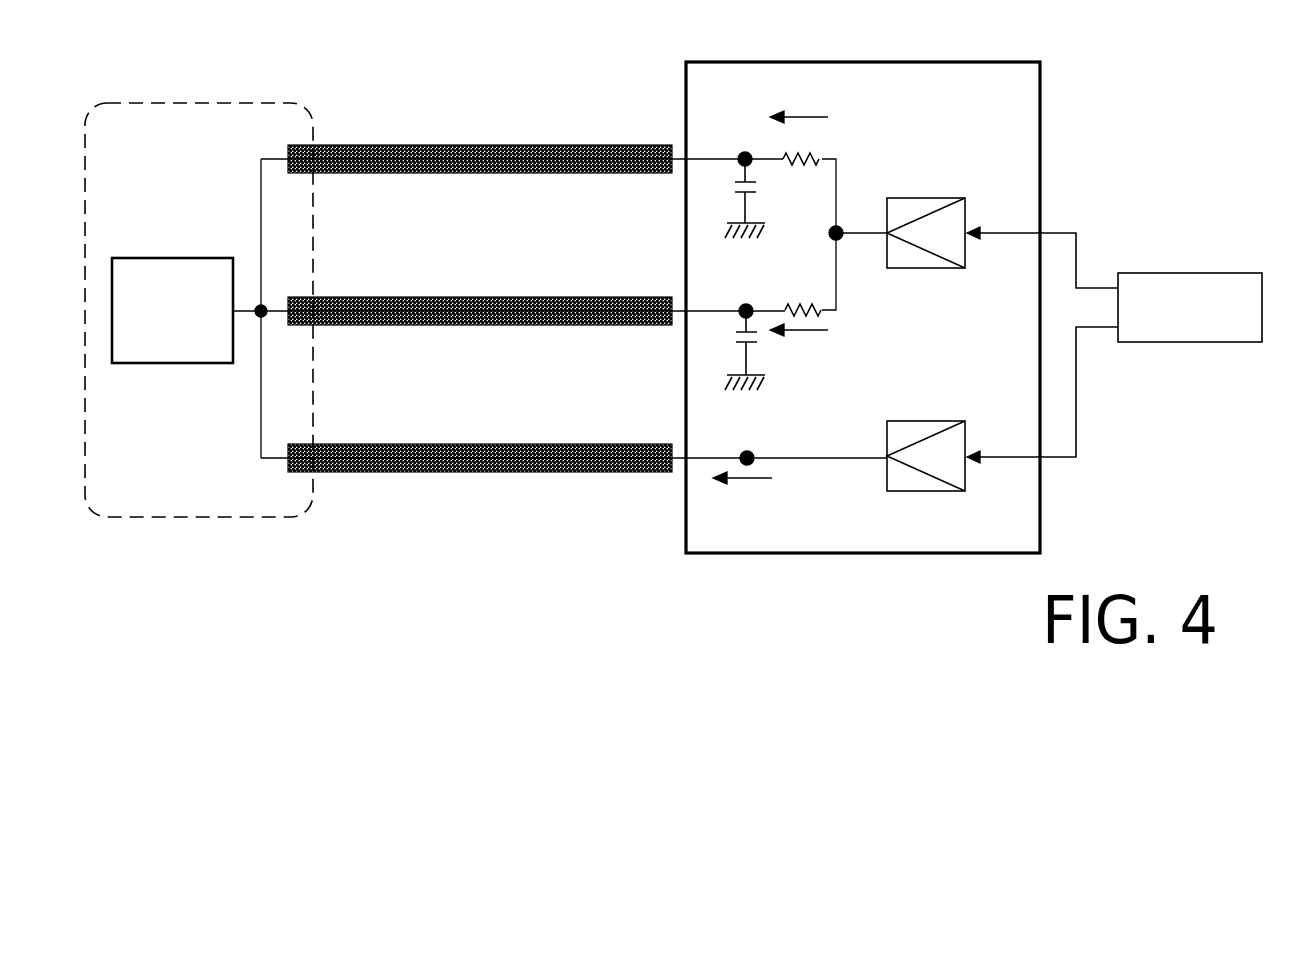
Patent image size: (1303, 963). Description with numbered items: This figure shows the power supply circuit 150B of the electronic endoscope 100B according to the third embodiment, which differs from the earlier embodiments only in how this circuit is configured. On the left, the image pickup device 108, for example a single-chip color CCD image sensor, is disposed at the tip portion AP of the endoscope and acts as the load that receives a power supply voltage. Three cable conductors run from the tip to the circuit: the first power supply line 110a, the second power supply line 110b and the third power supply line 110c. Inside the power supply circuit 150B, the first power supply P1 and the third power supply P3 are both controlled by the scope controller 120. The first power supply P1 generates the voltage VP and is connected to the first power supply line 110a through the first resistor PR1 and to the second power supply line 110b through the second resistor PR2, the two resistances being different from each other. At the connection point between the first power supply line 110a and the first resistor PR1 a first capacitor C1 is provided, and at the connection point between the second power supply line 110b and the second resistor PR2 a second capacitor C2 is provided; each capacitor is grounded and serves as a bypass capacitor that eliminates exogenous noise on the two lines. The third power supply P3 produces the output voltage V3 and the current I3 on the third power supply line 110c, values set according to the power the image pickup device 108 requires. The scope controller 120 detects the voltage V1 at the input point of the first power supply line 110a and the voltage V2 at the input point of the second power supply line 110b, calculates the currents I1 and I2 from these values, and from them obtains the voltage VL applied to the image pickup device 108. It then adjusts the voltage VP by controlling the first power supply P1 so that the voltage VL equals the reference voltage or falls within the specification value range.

The tip portion AP is at (230, 103).
The image pickup device 108 is at (172, 258).
The voltage applied to the image pickup device VL is at (265, 308).
The first power supply line 110a is at (472, 125).
The second power supply line 110b is at (472, 278).
The third power supply line 110c is at (472, 425).
The power supply circuit 150B is at (1040, 89).
The voltage applied to the input point of the first power supply line V1 is at (744, 145).
The voltage applied to the input point of the second power supply line V2 is at (745, 297).
The output voltage of the third power supply V3 is at (746, 444).
The voltage generated by the first power supply VP is at (818, 244).
The first resistor PR1 is at (802, 145).
The second resistor PR2 is at (803, 296).
The first capacitor C1 is at (734, 202).
The second capacitor C2 is at (734, 354).
The current in the first power supply line I1 is at (799, 103).
The current in the second power supply line I2 is at (799, 342).
The current of the third power supply I3 is at (742, 490).
The first power supply P1 is at (967, 213).
The third power supply P3 is at (967, 437).
The scope controller 120 is at (1178, 343).
The electronic endoscope 100B is at (537, 597).